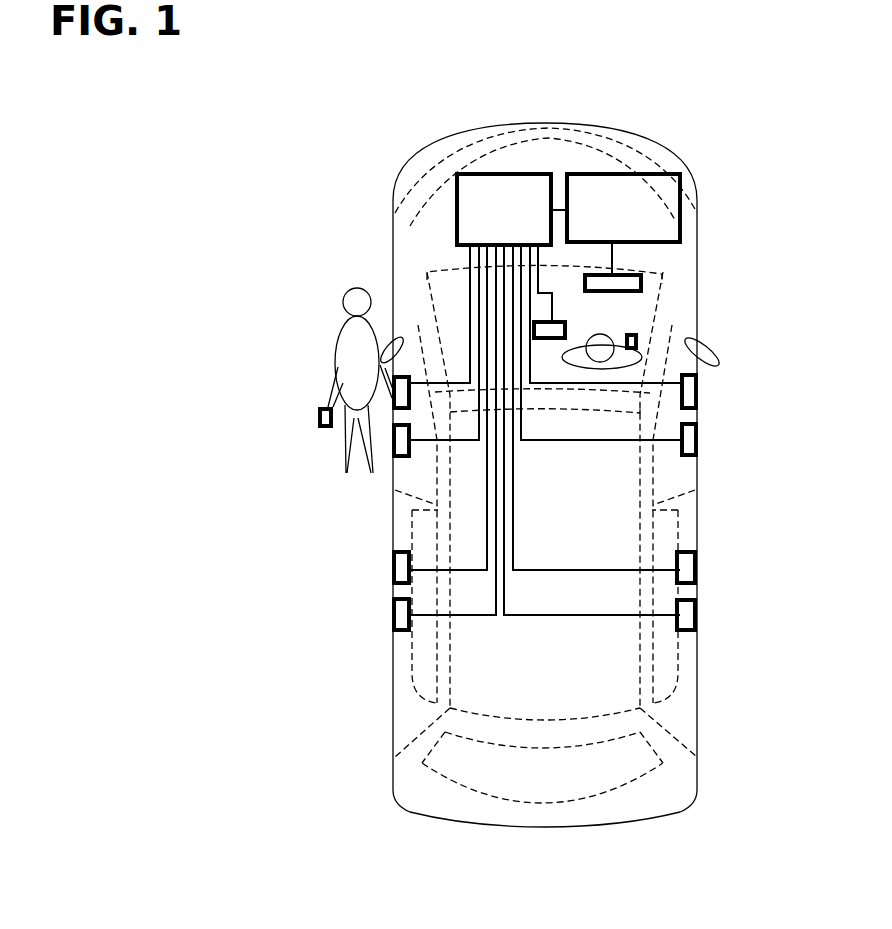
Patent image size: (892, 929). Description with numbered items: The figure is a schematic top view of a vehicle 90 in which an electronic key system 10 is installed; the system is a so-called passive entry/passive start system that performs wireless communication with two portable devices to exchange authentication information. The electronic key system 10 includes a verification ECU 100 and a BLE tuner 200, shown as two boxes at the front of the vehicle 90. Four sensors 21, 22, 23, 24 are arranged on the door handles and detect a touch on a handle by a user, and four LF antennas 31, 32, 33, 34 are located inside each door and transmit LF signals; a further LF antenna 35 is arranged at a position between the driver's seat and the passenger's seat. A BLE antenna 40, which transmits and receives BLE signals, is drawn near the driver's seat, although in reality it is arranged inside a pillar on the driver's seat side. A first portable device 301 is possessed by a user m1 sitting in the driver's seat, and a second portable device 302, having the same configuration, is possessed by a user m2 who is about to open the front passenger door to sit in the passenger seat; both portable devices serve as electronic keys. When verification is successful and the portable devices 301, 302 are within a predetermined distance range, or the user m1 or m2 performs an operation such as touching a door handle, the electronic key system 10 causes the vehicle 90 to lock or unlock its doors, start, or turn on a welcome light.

The electronic key system 10 is at (568, 137).
The verification ECU 100 is at (507, 172).
The BLE tuner 200 is at (623, 159).
The BLE antenna 40 is at (647, 271).
The LF antenna 35 is at (567, 322).
The user m1 is at (612, 337).
The first portable device 301 is at (640, 337).
The second portable device 302 is at (318, 412).
The user m2 is at (342, 333).
The sensor 21 is at (700, 393).
The sensor 22 is at (403, 373).
The sensor 23 is at (698, 567).
The sensor 24 is at (392, 564).
The LF antenna 31 is at (700, 440).
The LF antenna 32 is at (400, 462).
The LF antenna 33 is at (698, 616).
The LF antenna 34 is at (392, 615).
The vehicle 90 is at (652, 816).